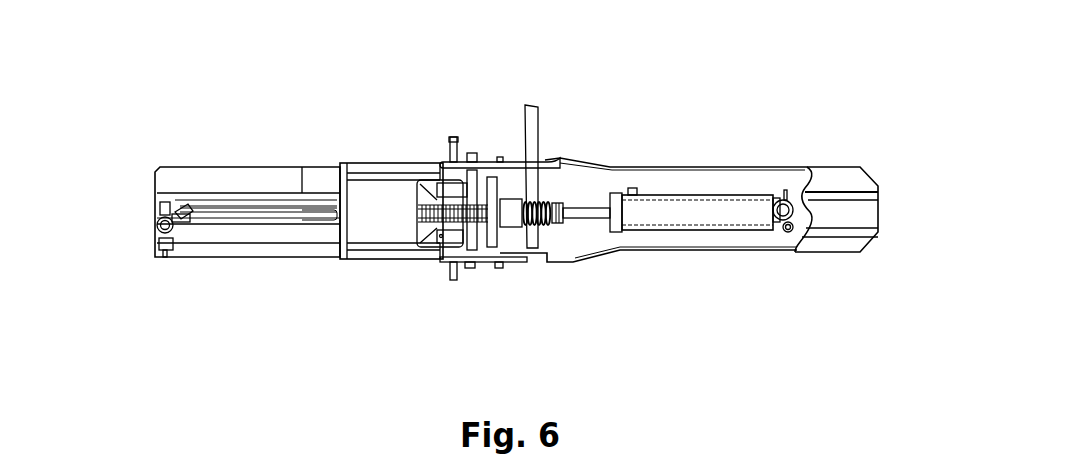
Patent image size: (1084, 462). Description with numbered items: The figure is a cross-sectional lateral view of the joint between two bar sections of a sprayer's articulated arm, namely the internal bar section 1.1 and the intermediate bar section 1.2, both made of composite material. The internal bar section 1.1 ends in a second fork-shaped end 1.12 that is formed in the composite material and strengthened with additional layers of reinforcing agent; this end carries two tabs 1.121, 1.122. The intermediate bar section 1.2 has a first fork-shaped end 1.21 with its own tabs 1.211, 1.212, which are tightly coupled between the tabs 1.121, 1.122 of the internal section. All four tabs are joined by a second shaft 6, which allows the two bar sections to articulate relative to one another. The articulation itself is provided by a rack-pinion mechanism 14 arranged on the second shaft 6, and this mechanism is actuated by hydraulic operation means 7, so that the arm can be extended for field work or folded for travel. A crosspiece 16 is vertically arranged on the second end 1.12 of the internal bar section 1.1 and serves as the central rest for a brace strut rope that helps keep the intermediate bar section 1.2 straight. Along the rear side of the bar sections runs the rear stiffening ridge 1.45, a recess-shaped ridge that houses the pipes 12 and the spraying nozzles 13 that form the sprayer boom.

The internal bar section 1.1 is at (830, 175).
The intermediate bar section 1.2 is at (200, 168).
The second fork-shaped end 1.12 is at (570, 158).
The tab 1.121 is at (483, 165).
The tab 1.122 is at (487, 255).
The first fork-shaped end 1.21 is at (327, 168).
The tab 1.211 is at (412, 168).
The tab 1.212 is at (418, 255).
The rear stiffening ridge 1.45 is at (263, 220).
The second shaft 6 is at (453, 273).
The hydraulic operation means 7 is at (673, 208).
The pipes 12 is at (237, 210).
The spraying nozzles 13 is at (158, 232).
The rack-pinion mechanism 14 is at (473, 220).
The crosspiece 16 is at (532, 130).